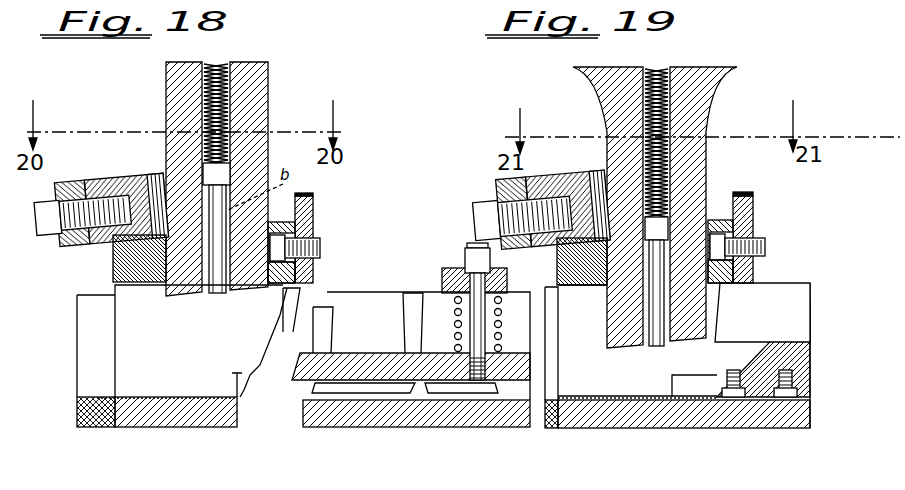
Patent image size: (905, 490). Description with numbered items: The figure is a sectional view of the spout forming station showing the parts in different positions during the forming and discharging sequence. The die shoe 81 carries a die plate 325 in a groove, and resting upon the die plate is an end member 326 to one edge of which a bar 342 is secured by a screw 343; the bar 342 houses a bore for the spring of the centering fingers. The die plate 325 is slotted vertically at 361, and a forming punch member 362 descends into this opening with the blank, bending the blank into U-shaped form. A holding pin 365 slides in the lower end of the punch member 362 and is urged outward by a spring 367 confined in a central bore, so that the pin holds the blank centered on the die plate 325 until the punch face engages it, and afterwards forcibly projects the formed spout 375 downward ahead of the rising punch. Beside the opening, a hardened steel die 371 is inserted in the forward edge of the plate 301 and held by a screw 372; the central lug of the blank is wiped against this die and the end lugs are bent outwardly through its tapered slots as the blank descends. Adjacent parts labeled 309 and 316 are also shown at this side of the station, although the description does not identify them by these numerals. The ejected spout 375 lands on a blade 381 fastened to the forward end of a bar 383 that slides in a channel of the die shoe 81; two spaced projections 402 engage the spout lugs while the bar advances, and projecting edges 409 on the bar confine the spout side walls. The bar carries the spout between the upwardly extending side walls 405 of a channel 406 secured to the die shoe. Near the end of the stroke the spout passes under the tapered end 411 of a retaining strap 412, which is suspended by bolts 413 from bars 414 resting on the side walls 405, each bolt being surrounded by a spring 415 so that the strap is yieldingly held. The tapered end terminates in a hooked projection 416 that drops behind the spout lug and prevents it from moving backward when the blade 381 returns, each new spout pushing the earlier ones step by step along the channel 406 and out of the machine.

In FIG. 18, the spring 367 is at (221, 68).
In FIG. 19, the spring 367 is at (663, 68).
In FIG. 18, the forming punch member 362 is at (264, 96).
In FIG. 19, the forming punch member 362 is at (707, 113).
In FIG. 18, the bar 342 is at (82, 175).
In FIG. 19, the bar 342 is at (505, 178).
In FIG. 18, the end member 326 is at (148, 175).
In FIG. 19, the end member 326 is at (588, 172).
In FIG. 18, the screw 343 is at (47, 230).
In FIG. 19, the screw 343 is at (482, 200).
In FIG. 18, the die plate 325 is at (118, 263).
In FIG. 19, the die plate 325 is at (562, 263).
In FIG. 18, the slot 361 is at (150, 284).
In FIG. 19, the slot 361 is at (600, 286).
In FIG. 18, the formed spout 375 is at (197, 294).
In FIG. 19, the formed spout 375 is at (630, 348).
In FIG. 18, the holding pin 365 is at (216, 290).
In FIG. 19, the holding pin 365 is at (657, 320).
In FIG. 18, the cap strip 309 is at (312, 194).
In FIG. 19, the cap strip 309 is at (740, 192).
In FIG. 18, the side plate 316 is at (316, 208).
In FIG. 19, the side plate 316 is at (757, 201).
In FIG. 18, the plate 301 is at (318, 229).
In FIG. 19, the plate 301 is at (752, 275).
In FIG. 18, the screw 372 is at (320, 248).
In FIG. 19, the screw 372 is at (766, 247).
In FIG. 18, the hardened steel die 371 is at (298, 271).
In FIG. 19, the hardened steel die 371 is at (757, 225).
In FIG. 18, the spaced projections 402 is at (296, 299).
In FIG. 19, the spaced projections 402 is at (762, 312).
In FIG. 18, the channel 406 is at (100, 420).
In FIG. 19, the channel 406 is at (551, 414).
In FIG. 18, the die shoe 81 is at (203, 415).
In FIG. 19, the die shoe 81 is at (603, 418).
In FIG. 18, the retaining strap 412 is at (300, 373).
In FIG. 18, the bolts 413 is at (478, 300).
In FIG. 18, the side walls 405 is at (425, 300).
In FIG. 18, the bars 414 is at (448, 272).
In FIG. 18, the spring 415 is at (440, 297).
In FIG. 18, the tapered end 411 is at (487, 340).
In FIG. 18, the hooked projection 416 is at (503, 385).
In FIG. 19, the bar 383 is at (792, 300).
In FIG. 19, the projecting edges 409 is at (688, 380).
In FIG. 19, the blade 381 is at (640, 372).